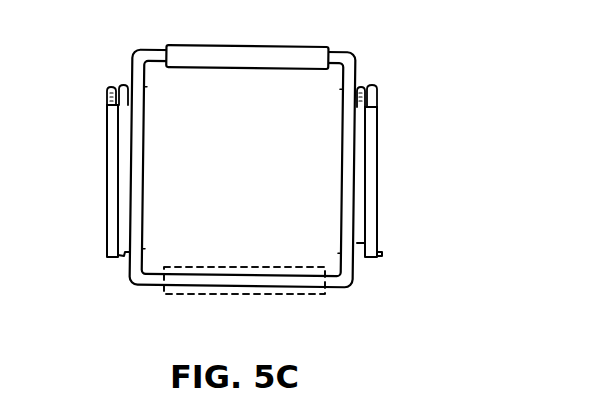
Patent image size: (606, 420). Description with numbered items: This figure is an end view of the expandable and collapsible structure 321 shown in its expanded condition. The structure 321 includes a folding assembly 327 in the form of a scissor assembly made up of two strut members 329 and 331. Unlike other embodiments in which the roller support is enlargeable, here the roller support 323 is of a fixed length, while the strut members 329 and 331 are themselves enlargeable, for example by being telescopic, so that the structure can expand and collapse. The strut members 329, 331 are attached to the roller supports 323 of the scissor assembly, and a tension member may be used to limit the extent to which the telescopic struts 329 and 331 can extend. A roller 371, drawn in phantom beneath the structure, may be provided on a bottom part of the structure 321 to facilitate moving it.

The structure 321 is at (108, 62).
The roller support 323 is at (355, 73).
The clip 327 is at (96, 141).
The strut member 329 is at (111, 194).
The strut member 331 is at (127, 127).
The roller 371 is at (297, 300).